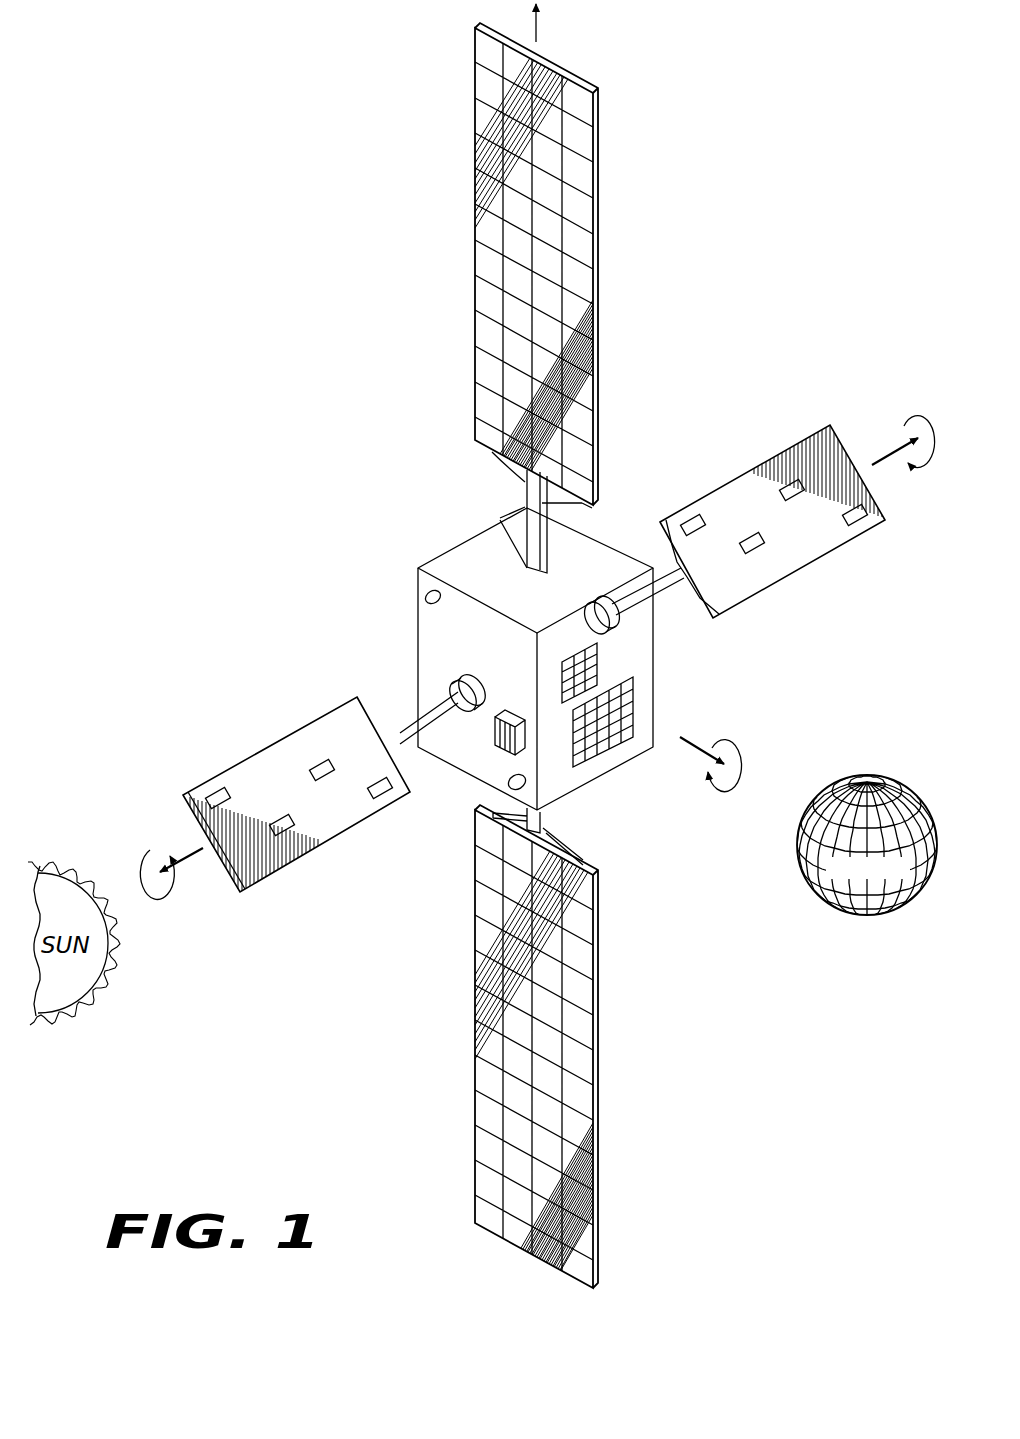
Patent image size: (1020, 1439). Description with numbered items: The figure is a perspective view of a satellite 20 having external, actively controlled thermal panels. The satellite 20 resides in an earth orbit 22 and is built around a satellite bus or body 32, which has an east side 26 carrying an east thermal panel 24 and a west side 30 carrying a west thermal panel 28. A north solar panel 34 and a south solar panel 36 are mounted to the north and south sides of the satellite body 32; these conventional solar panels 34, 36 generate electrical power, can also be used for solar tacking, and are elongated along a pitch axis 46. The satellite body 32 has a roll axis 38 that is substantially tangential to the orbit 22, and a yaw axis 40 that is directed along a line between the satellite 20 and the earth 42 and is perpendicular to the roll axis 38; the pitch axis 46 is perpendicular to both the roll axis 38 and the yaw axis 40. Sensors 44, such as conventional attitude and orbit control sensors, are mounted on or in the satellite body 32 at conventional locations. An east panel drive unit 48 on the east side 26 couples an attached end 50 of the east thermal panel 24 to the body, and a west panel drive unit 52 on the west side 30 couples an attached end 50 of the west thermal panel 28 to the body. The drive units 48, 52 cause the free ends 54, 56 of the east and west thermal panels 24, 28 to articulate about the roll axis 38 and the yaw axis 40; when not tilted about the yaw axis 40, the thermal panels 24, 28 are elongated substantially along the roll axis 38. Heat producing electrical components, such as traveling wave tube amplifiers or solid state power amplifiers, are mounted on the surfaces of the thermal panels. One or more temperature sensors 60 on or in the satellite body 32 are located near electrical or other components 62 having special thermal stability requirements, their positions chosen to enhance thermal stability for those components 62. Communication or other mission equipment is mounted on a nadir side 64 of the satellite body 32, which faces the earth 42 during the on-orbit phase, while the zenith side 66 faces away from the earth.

The satellite 20 is at (425, 1162).
The earth orbit 22 is at (888, 446).
The east thermal panel 24 is at (300, 729).
The east side 26 is at (418, 646).
The west thermal panel 28 is at (790, 576).
The west side 30 is at (668, 654).
The satellite body 32 is at (494, 581).
The north solar panel 34 is at (600, 298).
The south solar panel 36 is at (600, 1079).
The roll axis 38 is at (145, 846).
The yaw axis 40 is at (700, 727).
The earth 42 is at (868, 775).
The sensors 44 is at (425, 596).
The pitch axis 46 is at (537, 15).
The east panel drive unit 48 is at (470, 680).
The attached end 50 is at (394, 728).
The west panel drive unit 52 is at (597, 603).
The free end 54 is at (232, 891).
The free end 56 is at (879, 494).
The temperature sensors 60 is at (508, 779).
The components 62 is at (507, 711).
The nadir side 64 is at (566, 797).
The zenith side 66 is at (430, 546).